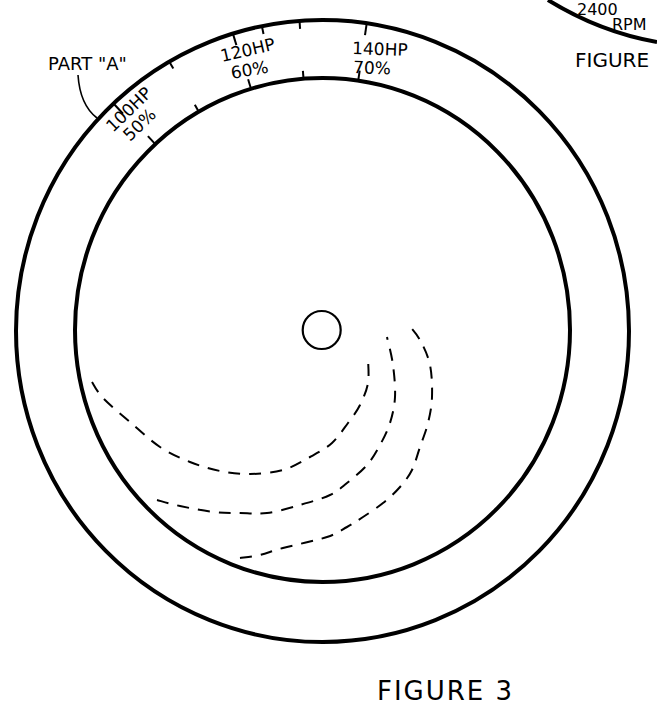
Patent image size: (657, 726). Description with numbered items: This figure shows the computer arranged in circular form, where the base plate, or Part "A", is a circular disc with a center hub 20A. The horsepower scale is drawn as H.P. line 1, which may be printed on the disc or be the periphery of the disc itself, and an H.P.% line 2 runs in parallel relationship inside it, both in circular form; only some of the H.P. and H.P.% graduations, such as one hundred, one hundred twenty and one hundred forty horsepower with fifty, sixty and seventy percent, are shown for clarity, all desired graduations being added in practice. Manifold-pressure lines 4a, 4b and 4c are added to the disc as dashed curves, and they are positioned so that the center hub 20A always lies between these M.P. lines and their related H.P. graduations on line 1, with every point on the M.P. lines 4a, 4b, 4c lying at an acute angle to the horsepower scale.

The H.P. scale line 1 is at (58, 172).
The H.P.% line 2 is at (83, 262).
The center hub 20A is at (312, 312).
The M.P. line 4a is at (405, 476).
The M.P. line 4b is at (330, 495).
The M.P. line 4c is at (263, 474).